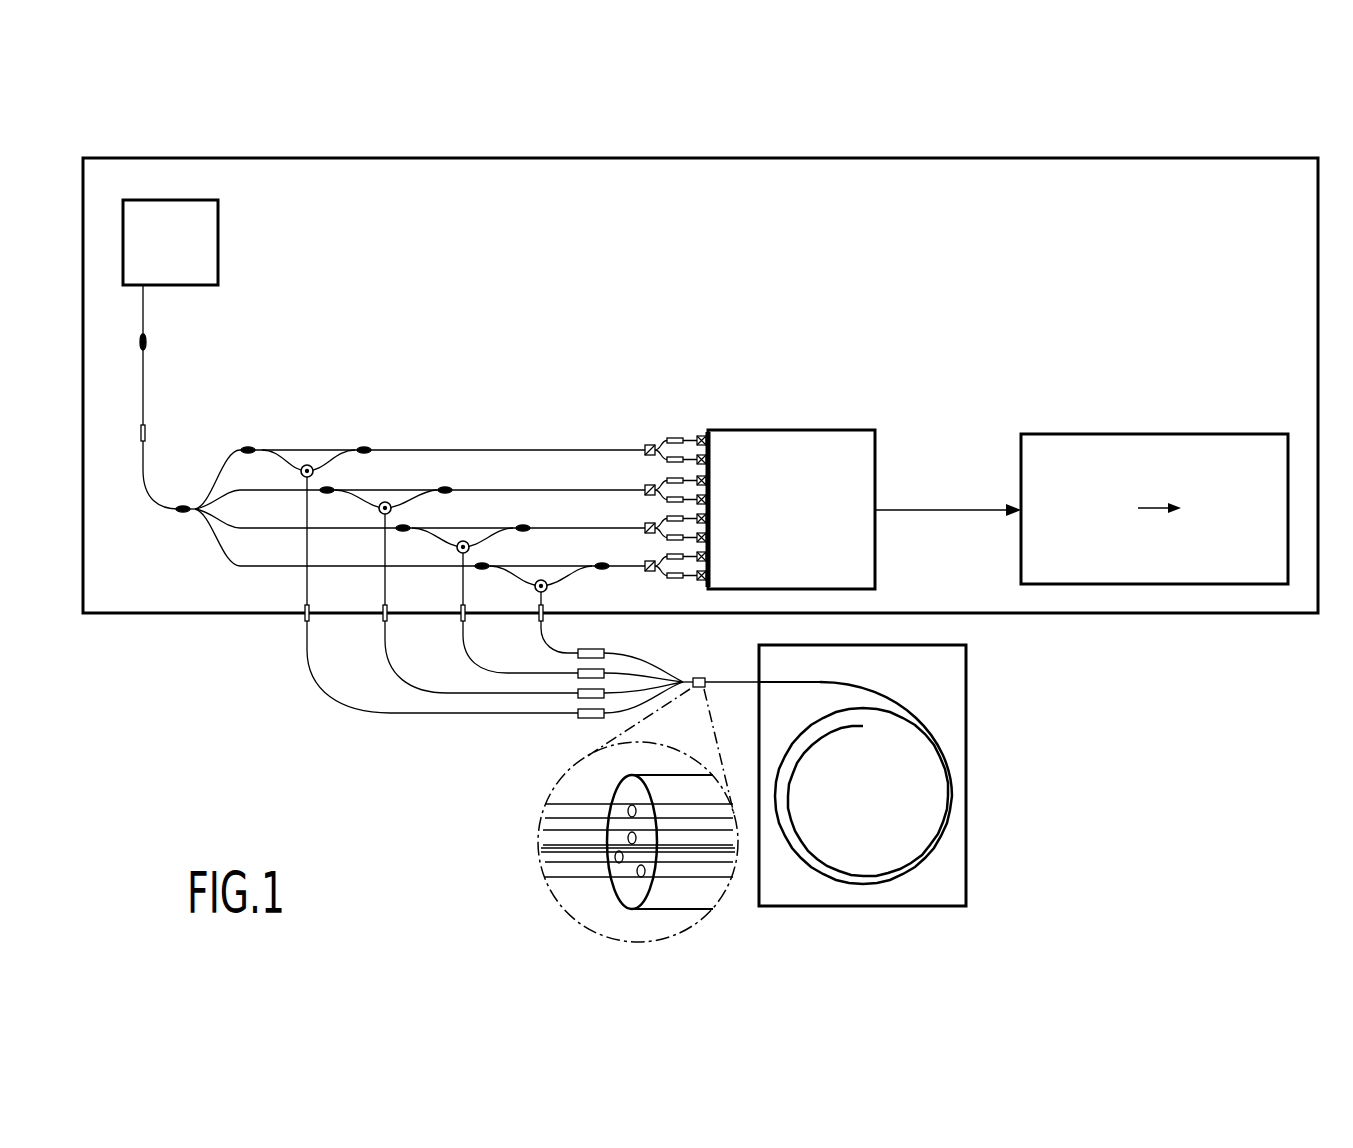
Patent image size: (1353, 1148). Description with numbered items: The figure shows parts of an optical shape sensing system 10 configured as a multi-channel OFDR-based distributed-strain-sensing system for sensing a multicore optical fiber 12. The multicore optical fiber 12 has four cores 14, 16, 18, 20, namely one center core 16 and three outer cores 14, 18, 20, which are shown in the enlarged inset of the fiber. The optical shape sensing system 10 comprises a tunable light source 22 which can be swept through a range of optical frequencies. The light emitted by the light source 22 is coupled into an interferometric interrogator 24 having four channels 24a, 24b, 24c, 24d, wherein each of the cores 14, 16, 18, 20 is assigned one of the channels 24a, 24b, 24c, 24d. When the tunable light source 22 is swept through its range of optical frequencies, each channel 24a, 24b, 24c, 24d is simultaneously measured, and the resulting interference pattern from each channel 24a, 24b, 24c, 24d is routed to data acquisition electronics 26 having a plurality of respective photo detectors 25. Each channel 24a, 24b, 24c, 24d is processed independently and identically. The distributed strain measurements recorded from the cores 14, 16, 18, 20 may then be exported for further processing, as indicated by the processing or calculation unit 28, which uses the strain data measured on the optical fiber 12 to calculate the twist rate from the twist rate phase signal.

The optical shape sensing system 10 is at (1028, 130).
The multicore optical fiber 12 is at (952, 790).
The core 14 is at (555, 811).
The center core 16 is at (552, 836).
The core 18 is at (548, 856).
The core 20 is at (552, 873).
The tunable light source 22 is at (218, 240).
The interferometric interrogator 24 is at (196, 535).
The channel 24a is at (542, 450).
The channel 24b is at (542, 490).
The channel 24c is at (542, 528).
The channel 24d is at (542, 566).
The photo detectors 25 is at (698, 430).
The data acquisition electronics 26 is at (791, 430).
The processing or calculation unit 28 is at (1153, 434).